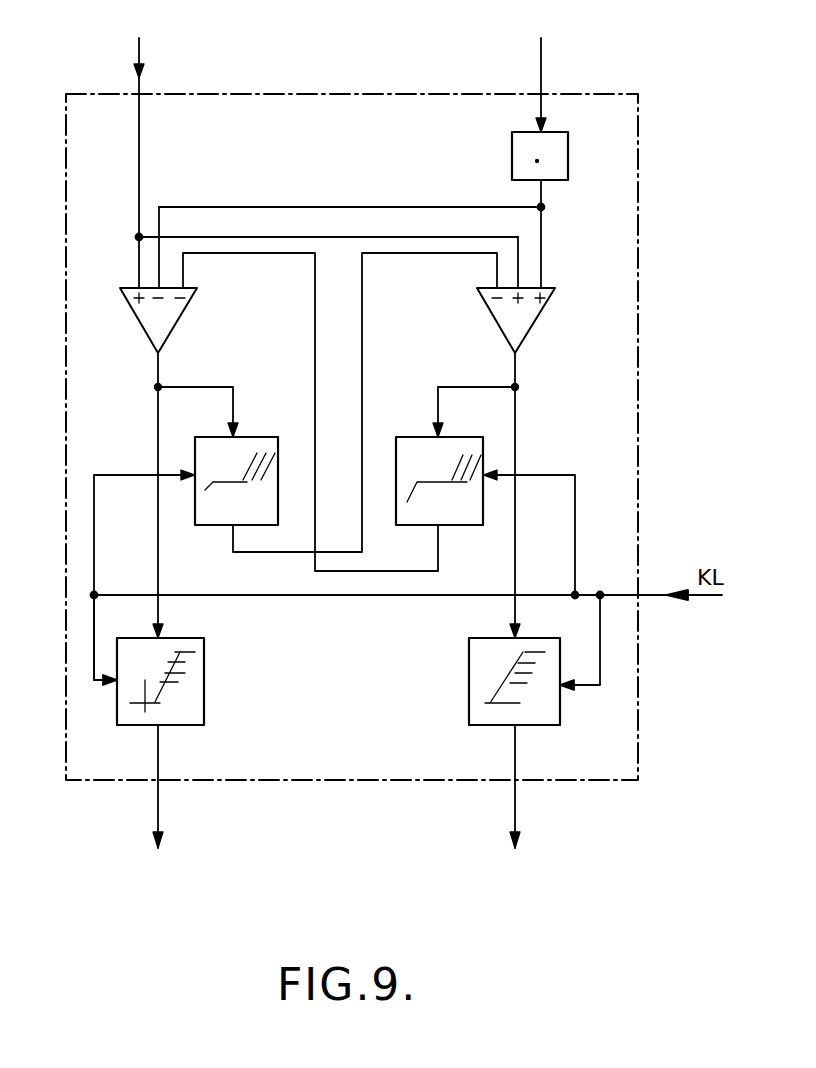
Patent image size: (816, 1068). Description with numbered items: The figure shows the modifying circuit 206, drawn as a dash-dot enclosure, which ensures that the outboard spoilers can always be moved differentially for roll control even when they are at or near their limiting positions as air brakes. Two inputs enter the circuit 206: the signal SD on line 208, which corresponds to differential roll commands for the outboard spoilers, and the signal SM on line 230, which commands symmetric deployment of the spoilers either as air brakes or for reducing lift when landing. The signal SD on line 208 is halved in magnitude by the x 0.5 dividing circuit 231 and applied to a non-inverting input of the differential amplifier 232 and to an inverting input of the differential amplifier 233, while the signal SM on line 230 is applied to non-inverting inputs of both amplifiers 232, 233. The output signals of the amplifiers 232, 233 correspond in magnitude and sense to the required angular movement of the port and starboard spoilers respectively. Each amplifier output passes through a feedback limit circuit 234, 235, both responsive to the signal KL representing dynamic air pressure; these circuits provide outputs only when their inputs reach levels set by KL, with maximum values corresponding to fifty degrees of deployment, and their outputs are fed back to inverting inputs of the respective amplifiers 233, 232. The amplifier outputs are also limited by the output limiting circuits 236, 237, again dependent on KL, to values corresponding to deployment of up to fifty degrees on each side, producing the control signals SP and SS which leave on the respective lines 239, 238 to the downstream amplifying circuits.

The modifying circuit 206 is at (97, 762).
The line 208 is at (541, 77).
The line 230 is at (139, 58).
The x 0.5 dividing circuit 231 is at (553, 170).
The differential amplifier 232 is at (515, 317).
The differential amplifier 233 is at (160, 317).
The feedback limit circuit 234 is at (410, 455).
The feedback limit circuit 235 is at (243, 452).
The output limiting circuit 236 is at (480, 680).
The output limiting circuit 237 is at (187, 686).
The line 238 is at (517, 800).
The line 239 is at (163, 797).